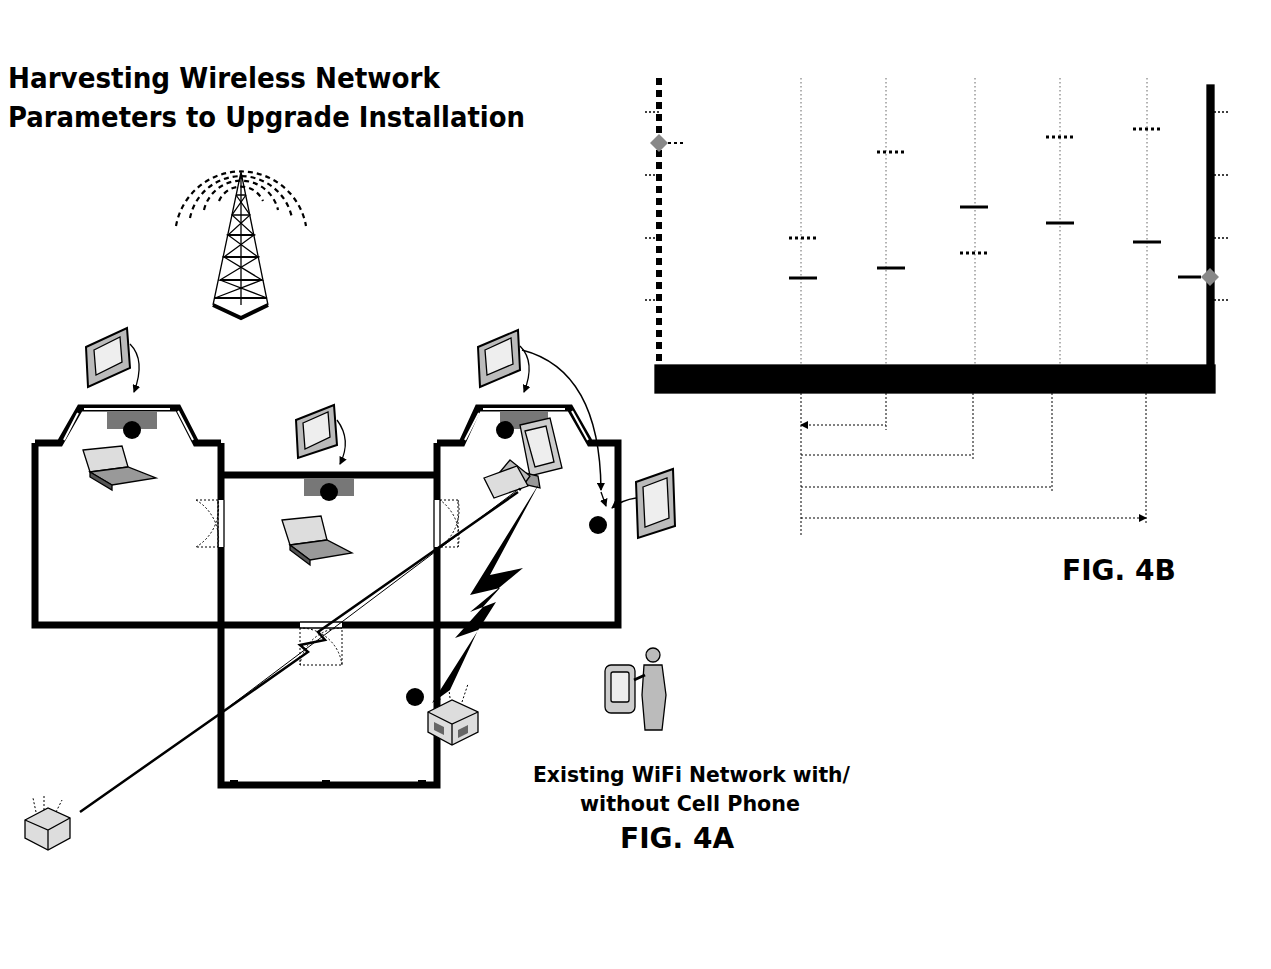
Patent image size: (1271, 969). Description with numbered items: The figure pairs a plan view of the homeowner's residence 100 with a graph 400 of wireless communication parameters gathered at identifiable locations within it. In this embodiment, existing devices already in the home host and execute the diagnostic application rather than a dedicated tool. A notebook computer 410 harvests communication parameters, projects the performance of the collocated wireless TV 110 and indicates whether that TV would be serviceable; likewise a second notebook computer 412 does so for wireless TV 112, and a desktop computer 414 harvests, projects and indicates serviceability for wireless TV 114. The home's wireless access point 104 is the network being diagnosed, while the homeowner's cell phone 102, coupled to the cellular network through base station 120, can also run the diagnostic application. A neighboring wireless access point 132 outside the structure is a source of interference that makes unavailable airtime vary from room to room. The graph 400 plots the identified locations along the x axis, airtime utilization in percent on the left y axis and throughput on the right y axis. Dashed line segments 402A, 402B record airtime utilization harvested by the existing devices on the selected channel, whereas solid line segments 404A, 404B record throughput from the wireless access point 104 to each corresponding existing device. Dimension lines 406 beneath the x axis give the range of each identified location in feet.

In FIG. 4A, the home 100 is at (48, 627).
In FIG. 4A, the cell phone 102 is at (603, 678).
In FIG. 4A, the wireless access point 104 is at (478, 730).
In FIG. 4A, the wireless TV 110 is at (84, 353).
In FIG. 4A, the wireless TV 112 is at (294, 425).
In FIG. 4A, the wireless TV 114 is at (476, 353).
In FIG. 4A, the base station 120 is at (268, 305).
In FIG. 4A, the neighboring WAP 132 is at (72, 828).
In FIG. 4A, the notebook computer 410 is at (128, 466).
In FIG. 4A, the notebook computer 412 is at (327, 540).
In FIG. 4A, the desktop computer 414 is at (506, 452).
In FIG. 4B, the graph 400 is at (626, 168).
In FIG. 4B, the dashed line segment 402A is at (806, 233).
In FIG. 4B, the dashed line segment 402B is at (893, 147).
In FIG. 4B, the solid line segment 404A is at (801, 284).
In FIG. 4B, the solid line segment 404B is at (890, 274).
In FIG. 4B, the dimension lines 406 is at (871, 541).